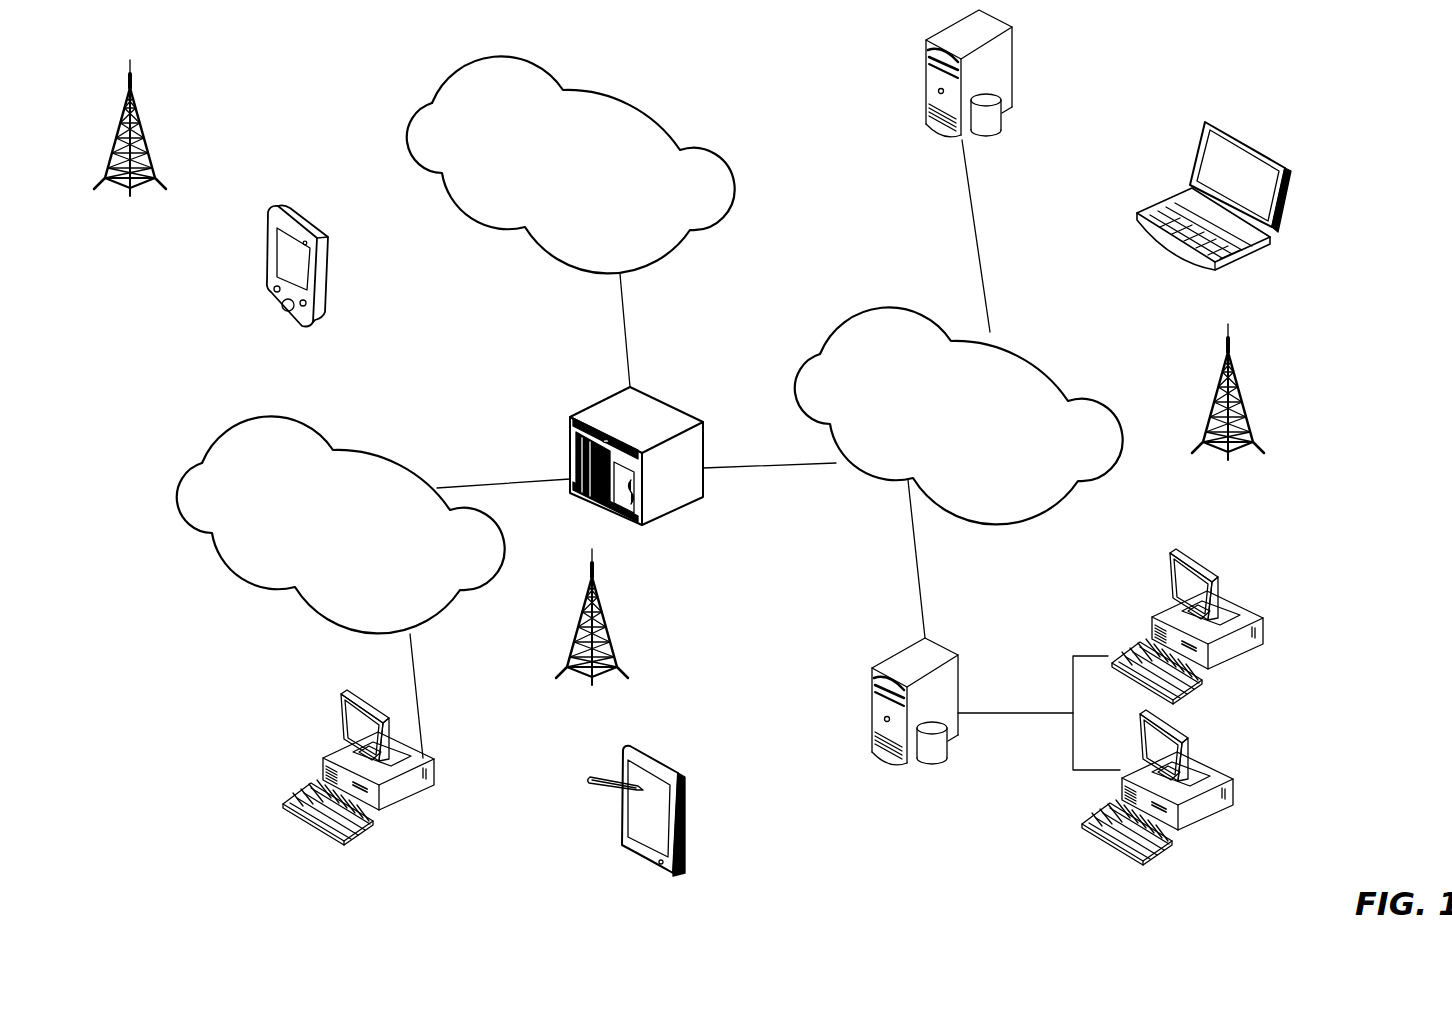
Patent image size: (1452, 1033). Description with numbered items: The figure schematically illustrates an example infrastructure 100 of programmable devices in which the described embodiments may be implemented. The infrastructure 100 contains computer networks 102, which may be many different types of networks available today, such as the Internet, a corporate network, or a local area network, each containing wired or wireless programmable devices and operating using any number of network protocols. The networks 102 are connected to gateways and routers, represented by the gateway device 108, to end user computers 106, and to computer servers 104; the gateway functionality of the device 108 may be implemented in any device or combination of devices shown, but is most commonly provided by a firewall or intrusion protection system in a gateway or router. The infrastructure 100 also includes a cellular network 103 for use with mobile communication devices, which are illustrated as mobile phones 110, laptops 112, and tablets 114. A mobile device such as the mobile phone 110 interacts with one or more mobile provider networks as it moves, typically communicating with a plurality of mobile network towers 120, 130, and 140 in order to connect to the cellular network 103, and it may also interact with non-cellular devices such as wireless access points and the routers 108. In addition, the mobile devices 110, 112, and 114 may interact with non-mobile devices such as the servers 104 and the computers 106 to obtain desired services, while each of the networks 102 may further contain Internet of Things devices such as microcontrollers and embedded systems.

The infrastructure 100 is at (1118, 108).
The computer networks 102 is at (667, 470).
The cellular network 103 is at (571, 157).
The computer servers 104 is at (881, 385).
The end user computers 106 is at (809, 688).
The gateways and routers 108 is at (668, 437).
The mobile phones 110 is at (337, 246).
The laptops 112 is at (1246, 188).
The tablets 114 is at (676, 795).
The mobile network tower 120 is at (592, 636).
The mobile network tower 130 is at (1228, 411).
The mobile network tower 140 is at (130, 146).